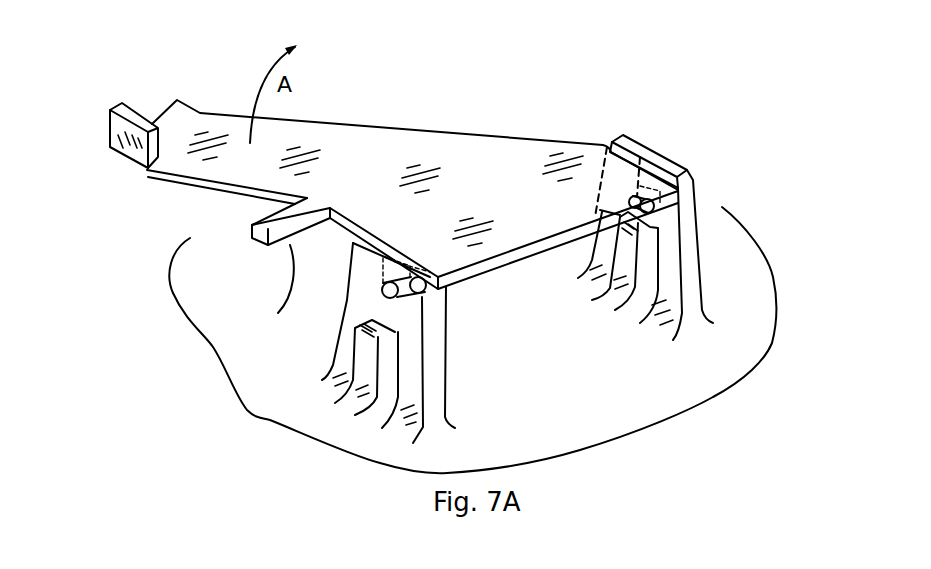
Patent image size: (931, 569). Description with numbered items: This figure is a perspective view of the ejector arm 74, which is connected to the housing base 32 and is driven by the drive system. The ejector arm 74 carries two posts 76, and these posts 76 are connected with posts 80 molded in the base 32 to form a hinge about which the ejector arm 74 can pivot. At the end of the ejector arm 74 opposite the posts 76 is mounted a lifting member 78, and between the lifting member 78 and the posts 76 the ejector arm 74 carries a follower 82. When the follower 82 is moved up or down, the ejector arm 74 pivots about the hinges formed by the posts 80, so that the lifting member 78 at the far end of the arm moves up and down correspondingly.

The ejector arm 74 is at (477, 98).
The posts 76 is at (383, 283).
The lifting member 78 is at (112, 125).
The posts 80 is at (657, 150).
The follower 82 is at (231, 287).
The housing base 32 is at (560, 424).